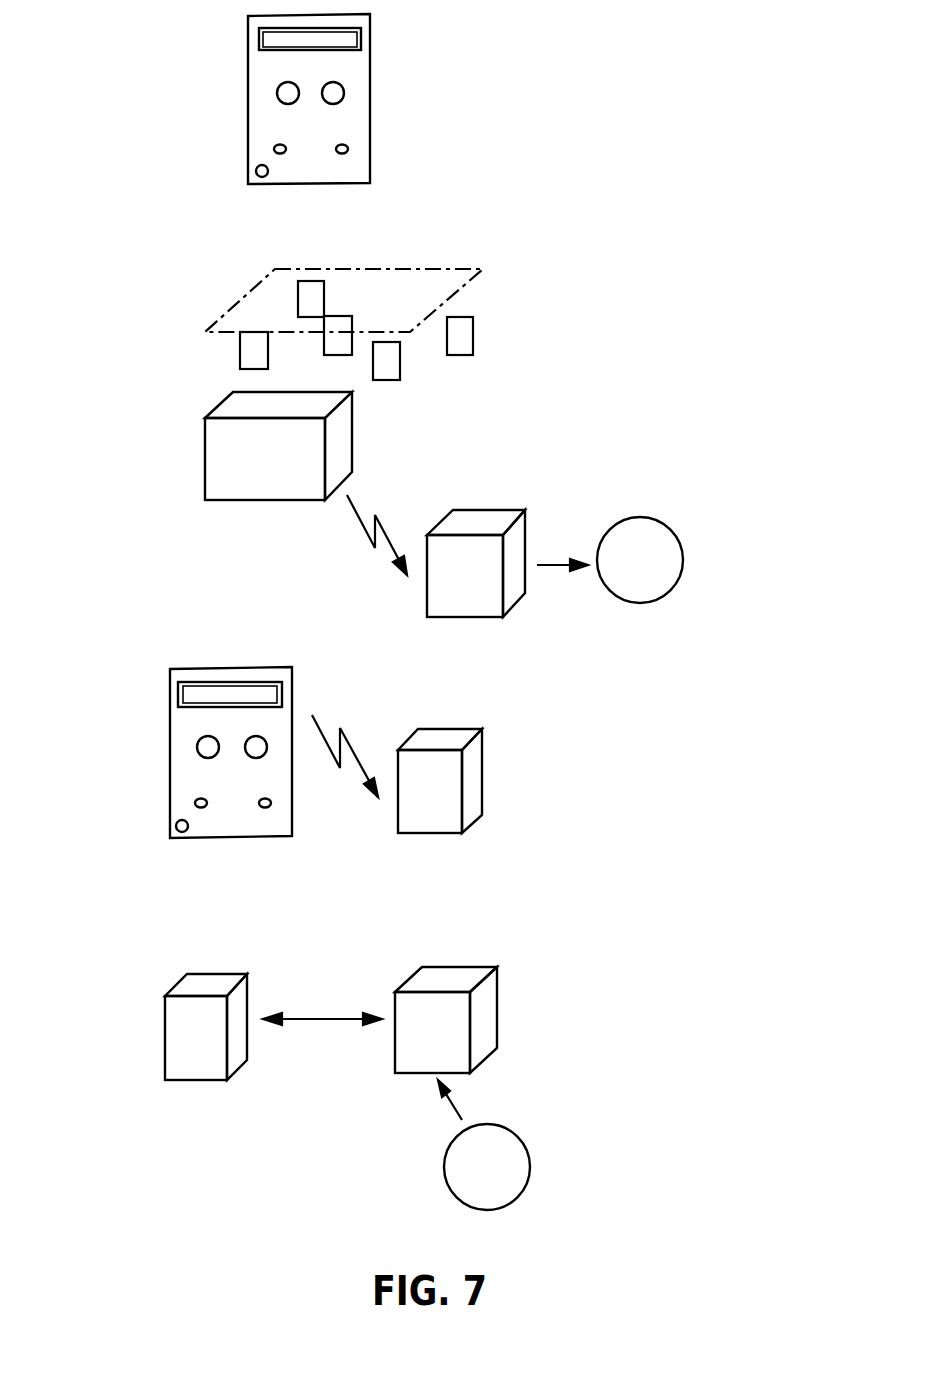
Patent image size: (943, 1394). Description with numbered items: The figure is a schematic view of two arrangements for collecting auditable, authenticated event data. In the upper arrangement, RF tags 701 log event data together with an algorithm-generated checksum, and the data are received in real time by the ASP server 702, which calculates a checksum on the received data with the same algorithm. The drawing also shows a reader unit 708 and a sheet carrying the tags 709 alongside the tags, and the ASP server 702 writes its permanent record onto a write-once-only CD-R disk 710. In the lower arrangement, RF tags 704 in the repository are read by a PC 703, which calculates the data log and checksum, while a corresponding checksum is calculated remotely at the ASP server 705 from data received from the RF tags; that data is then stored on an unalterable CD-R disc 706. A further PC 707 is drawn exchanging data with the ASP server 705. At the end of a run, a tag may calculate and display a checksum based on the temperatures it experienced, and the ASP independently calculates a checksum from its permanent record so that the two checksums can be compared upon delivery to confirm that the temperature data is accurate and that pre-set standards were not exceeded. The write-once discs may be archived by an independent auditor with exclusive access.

The RF tags 701 is at (248, 92).
The ASP server 702 is at (482, 510).
The PC 703 is at (483, 777).
The RF tags 704 is at (169, 746).
The ASP server 705 is at (498, 1012).
The CD-R disc 706 is at (531, 1168).
The personal computer 707 is at (165, 1033).
The game console / storage box 708 is at (205, 462).
The game card sheet with playing pieces 709 is at (399, 267).
The CD-R disk 710 is at (685, 560).